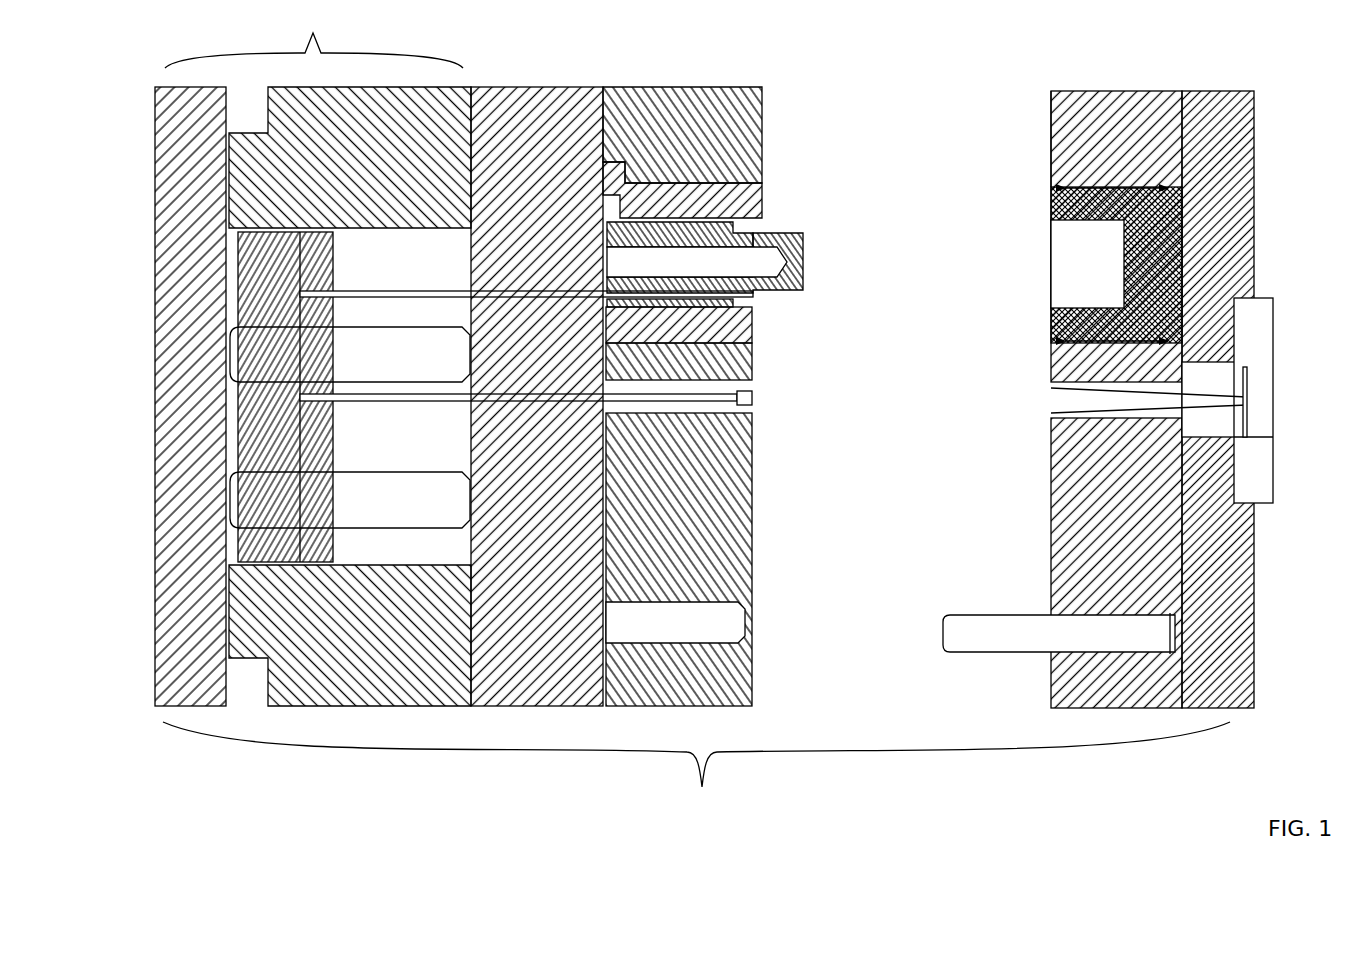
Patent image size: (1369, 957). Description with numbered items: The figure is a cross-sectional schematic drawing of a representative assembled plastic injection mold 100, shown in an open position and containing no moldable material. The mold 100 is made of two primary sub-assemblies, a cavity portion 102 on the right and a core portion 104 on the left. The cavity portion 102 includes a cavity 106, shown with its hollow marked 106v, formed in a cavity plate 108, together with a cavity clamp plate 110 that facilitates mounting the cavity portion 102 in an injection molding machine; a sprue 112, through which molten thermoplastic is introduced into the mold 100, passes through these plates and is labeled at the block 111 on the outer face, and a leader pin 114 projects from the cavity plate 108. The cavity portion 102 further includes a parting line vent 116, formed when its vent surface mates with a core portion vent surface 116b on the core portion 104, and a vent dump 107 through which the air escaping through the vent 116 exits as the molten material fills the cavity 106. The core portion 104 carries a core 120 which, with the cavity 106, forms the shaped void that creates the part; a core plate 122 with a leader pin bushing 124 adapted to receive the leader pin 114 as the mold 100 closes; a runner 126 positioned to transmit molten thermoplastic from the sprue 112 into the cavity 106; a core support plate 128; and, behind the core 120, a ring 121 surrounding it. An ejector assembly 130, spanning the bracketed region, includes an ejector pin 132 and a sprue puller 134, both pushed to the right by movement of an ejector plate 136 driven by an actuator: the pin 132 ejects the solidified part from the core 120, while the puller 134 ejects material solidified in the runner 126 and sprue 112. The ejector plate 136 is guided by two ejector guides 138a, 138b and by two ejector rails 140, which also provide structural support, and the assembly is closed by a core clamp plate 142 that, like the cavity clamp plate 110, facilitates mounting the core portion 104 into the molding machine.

The injection mold 100 is at (696, 772).
The cavity portion 102 is at (1160, 70).
The core portion 104 is at (515, 70).
The cavity 106 is at (1075, 251).
The cavity void 106v is at (1116, 277).
The vent dump 107 is at (1051, 130).
The cavity plate 108 is at (1080, 115).
The cavity clamp plate 110 is at (1227, 198).
The actuator block 111 is at (1260, 477).
The sprue 112 is at (1195, 397).
The leader pin 114 is at (1010, 637).
The parting line vent 116 is at (1051, 213).
The core portion vent surface 116b is at (762, 212).
The core 120 is at (800, 248).
The retainer ring 121 is at (690, 198).
The core plate 122 is at (695, 112).
The leader pin bushing 124 is at (725, 640).
The runner 126 is at (755, 371).
The core support plate 128 is at (578, 106).
The ejector assembly 130 is at (314, 38).
The ejector pin 132 is at (402, 290).
The sprue puller 134 is at (348, 400).
The ejector plate 136 is at (315, 262).
The ejector guide 138a is at (380, 503).
The ejector guide 138b is at (385, 350).
The ejector rails 140 is at (335, 181).
The core clamp plate 142 is at (185, 138).